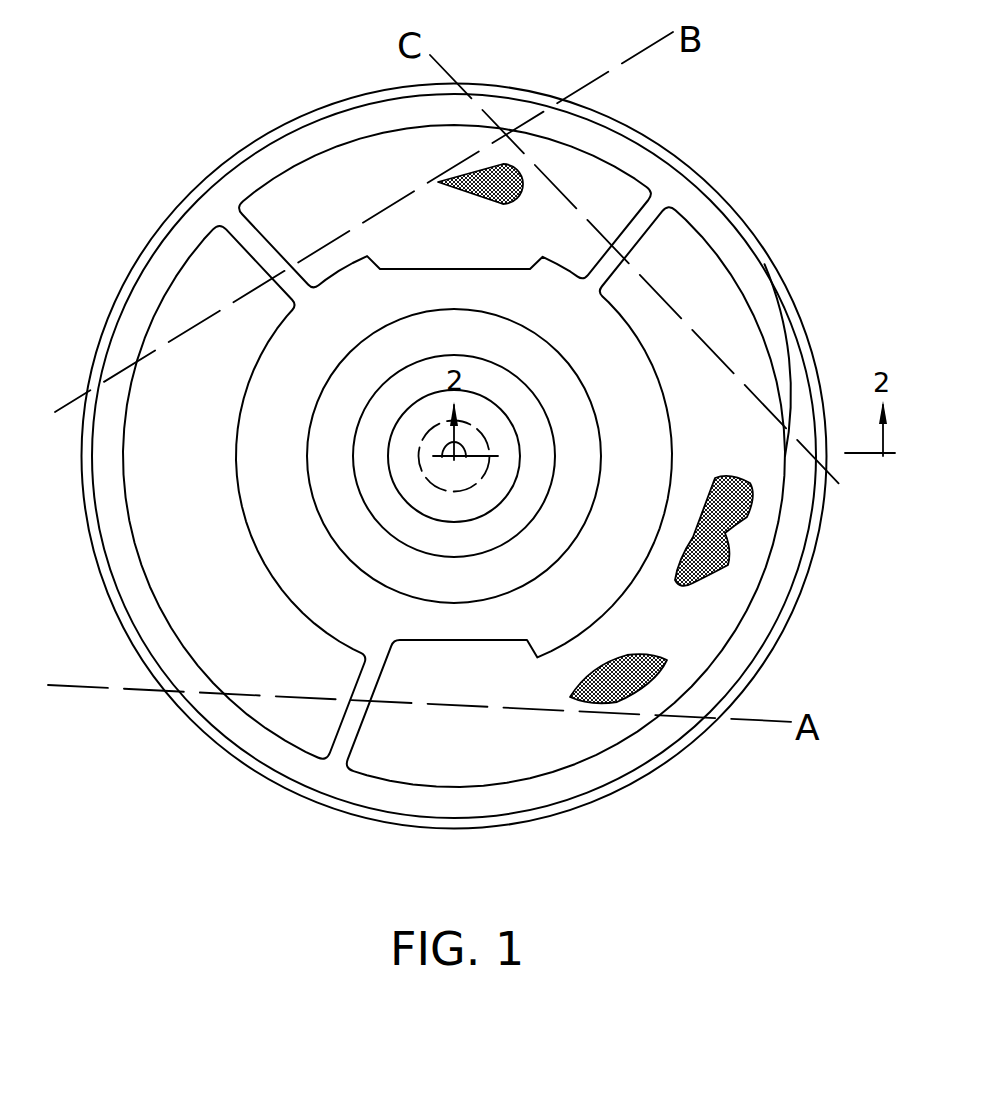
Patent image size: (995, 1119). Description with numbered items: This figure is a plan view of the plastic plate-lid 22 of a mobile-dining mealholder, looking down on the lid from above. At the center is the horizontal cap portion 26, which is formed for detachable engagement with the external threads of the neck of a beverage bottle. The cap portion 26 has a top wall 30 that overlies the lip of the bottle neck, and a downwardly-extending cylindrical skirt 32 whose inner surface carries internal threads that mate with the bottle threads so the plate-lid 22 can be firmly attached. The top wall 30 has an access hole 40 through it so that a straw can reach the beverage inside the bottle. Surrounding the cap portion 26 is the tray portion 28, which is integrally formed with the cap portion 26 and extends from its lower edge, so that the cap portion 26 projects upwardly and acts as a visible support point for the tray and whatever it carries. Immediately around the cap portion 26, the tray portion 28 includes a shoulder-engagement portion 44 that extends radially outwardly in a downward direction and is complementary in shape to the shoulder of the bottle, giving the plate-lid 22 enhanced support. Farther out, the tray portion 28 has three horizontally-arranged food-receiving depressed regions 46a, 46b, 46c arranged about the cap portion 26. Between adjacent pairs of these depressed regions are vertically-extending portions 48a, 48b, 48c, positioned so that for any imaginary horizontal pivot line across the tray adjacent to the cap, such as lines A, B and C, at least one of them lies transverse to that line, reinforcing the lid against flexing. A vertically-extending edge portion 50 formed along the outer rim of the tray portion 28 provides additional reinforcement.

The plate-lid 22 is at (245, 126).
The cap portion 26 is at (478, 407).
The tray portion 28 is at (717, 270).
The top wall 30 is at (497, 487).
The cylindrical skirt 32 is at (510, 423).
The access hole 40 is at (445, 463).
The shoulder-engagement portion 44 is at (320, 452).
The food-receiving depressed region 46a is at (447, 777).
The food-receiving depressed region 46b is at (183, 605).
The food-receiving depressed region 46c is at (456, 140).
The vertically-extending portion 48a is at (343, 733).
The vertically-extending portion 48b is at (257, 253).
The vertically-extending portion 48c is at (635, 235).
The vertically-extending edge portion 50 is at (630, 758).